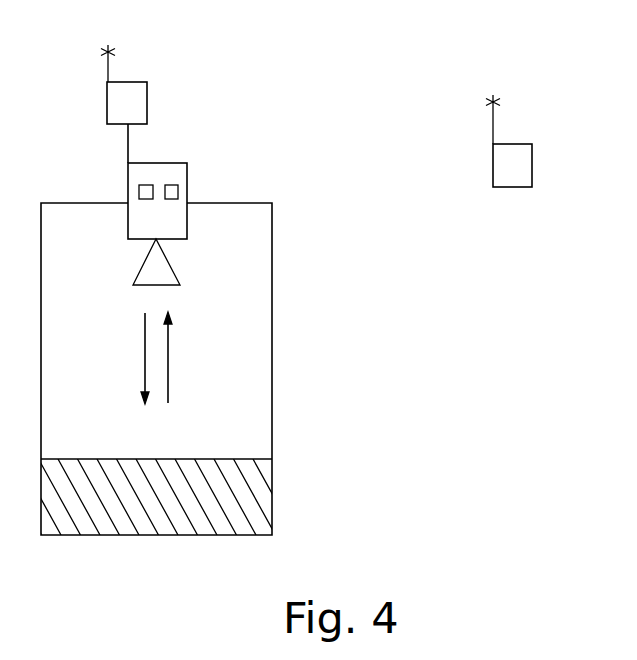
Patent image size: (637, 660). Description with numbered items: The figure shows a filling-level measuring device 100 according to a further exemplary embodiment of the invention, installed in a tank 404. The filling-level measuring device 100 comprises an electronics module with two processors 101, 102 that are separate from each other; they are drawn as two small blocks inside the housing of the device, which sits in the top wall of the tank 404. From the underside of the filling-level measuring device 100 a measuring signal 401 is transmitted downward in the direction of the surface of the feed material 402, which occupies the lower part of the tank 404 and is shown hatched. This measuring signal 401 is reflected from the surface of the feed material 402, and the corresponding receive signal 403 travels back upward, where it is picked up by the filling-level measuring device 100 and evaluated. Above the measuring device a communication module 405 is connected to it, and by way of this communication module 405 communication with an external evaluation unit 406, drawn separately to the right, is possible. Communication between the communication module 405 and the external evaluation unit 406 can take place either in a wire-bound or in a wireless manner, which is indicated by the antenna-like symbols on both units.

The filling-level measuring device 100 is at (173, 163).
The processor 101 is at (142, 185).
The processor 102 is at (172, 185).
The measuring signal 401 is at (145, 358).
The feed material 402 is at (262, 485).
The receive signal 403 is at (170, 358).
The tank 404 is at (272, 250).
The communication module 405 is at (130, 82).
The external evaluation unit 406 is at (510, 188).